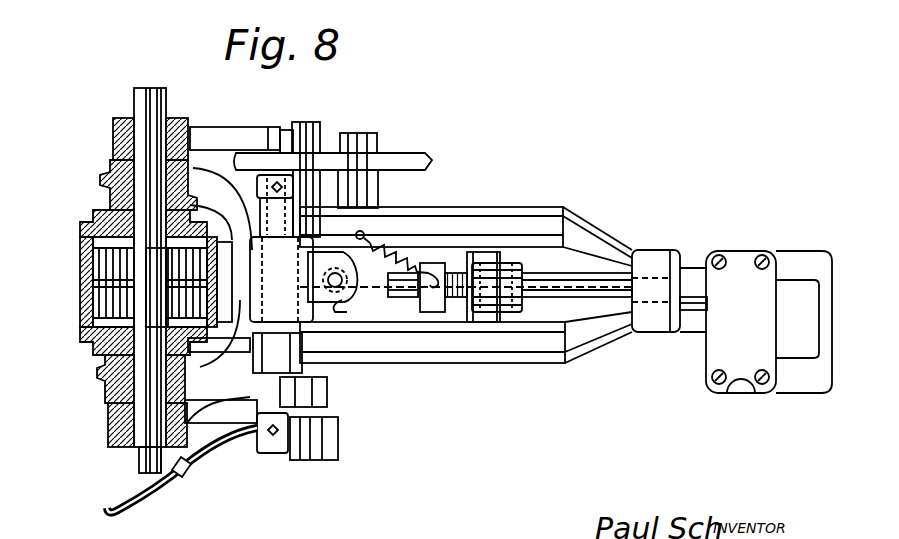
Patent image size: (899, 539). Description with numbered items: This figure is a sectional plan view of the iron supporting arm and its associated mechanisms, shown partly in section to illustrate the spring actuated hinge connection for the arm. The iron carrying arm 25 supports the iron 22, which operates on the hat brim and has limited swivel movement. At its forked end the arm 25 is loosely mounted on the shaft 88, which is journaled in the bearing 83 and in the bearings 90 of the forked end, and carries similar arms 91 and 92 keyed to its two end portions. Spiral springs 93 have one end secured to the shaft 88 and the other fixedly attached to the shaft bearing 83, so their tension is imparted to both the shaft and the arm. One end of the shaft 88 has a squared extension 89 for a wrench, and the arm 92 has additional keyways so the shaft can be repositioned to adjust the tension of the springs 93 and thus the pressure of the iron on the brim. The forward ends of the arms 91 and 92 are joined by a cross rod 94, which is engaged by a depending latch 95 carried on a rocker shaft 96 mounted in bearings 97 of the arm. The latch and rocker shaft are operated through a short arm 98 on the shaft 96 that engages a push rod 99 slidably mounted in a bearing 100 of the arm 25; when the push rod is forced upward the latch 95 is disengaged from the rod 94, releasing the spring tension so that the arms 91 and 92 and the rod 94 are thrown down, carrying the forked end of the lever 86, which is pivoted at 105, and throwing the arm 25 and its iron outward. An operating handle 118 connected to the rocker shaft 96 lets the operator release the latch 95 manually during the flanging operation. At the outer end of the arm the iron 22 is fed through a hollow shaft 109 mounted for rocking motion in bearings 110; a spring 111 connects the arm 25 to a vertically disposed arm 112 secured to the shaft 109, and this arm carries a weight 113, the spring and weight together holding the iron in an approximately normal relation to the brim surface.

The iron 22 is at (769, 322).
The iron carrying arm 25 is at (440, 366).
The bearing 83 is at (92, 275).
The lever 86 is at (258, 160).
The shaft 88 is at (142, 128).
The squared extension 89 is at (165, 96).
The bearings 90 is at (112, 178).
The arm 91 is at (205, 130).
The arm 92 is at (215, 418).
The springs 93 is at (95, 302).
The cross rod 94 is at (308, 122).
The latch 95 is at (328, 386).
The rocker shaft 96 is at (283, 150).
The bearings 97 is at (302, 195).
The short arm 98 is at (397, 259).
The push rod 99 is at (348, 295).
The bearing 100 is at (343, 295).
The pivot 105 is at (360, 133).
The hollow shaft 109 is at (588, 292).
The bearings 110 is at (480, 320).
The spring 111 is at (398, 235).
The vertically disposed arm 112 is at (448, 265).
The weight 113 is at (495, 285).
The operating handle 118 is at (160, 492).